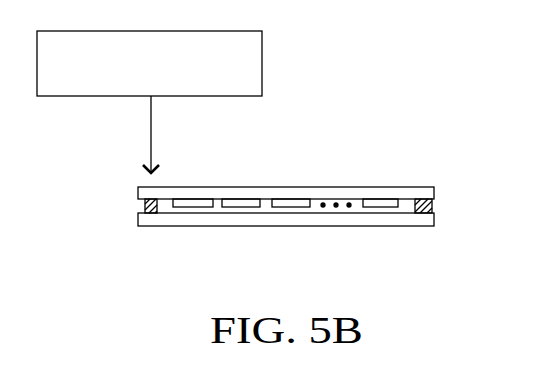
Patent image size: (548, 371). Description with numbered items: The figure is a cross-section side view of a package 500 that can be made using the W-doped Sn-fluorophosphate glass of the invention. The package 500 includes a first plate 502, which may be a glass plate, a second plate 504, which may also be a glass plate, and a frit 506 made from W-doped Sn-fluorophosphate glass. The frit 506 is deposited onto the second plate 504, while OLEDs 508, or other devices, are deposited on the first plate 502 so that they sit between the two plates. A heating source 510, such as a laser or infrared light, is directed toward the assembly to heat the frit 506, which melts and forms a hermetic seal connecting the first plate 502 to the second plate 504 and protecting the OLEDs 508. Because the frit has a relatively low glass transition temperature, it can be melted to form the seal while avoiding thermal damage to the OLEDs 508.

The package 500 is at (332, 66).
The first plate 502 is at (428, 187).
The second plate 504 is at (428, 226).
The frit 506 is at (146, 205).
The OLEDs 508 is at (292, 208).
The heating source 510 is at (167, 78).